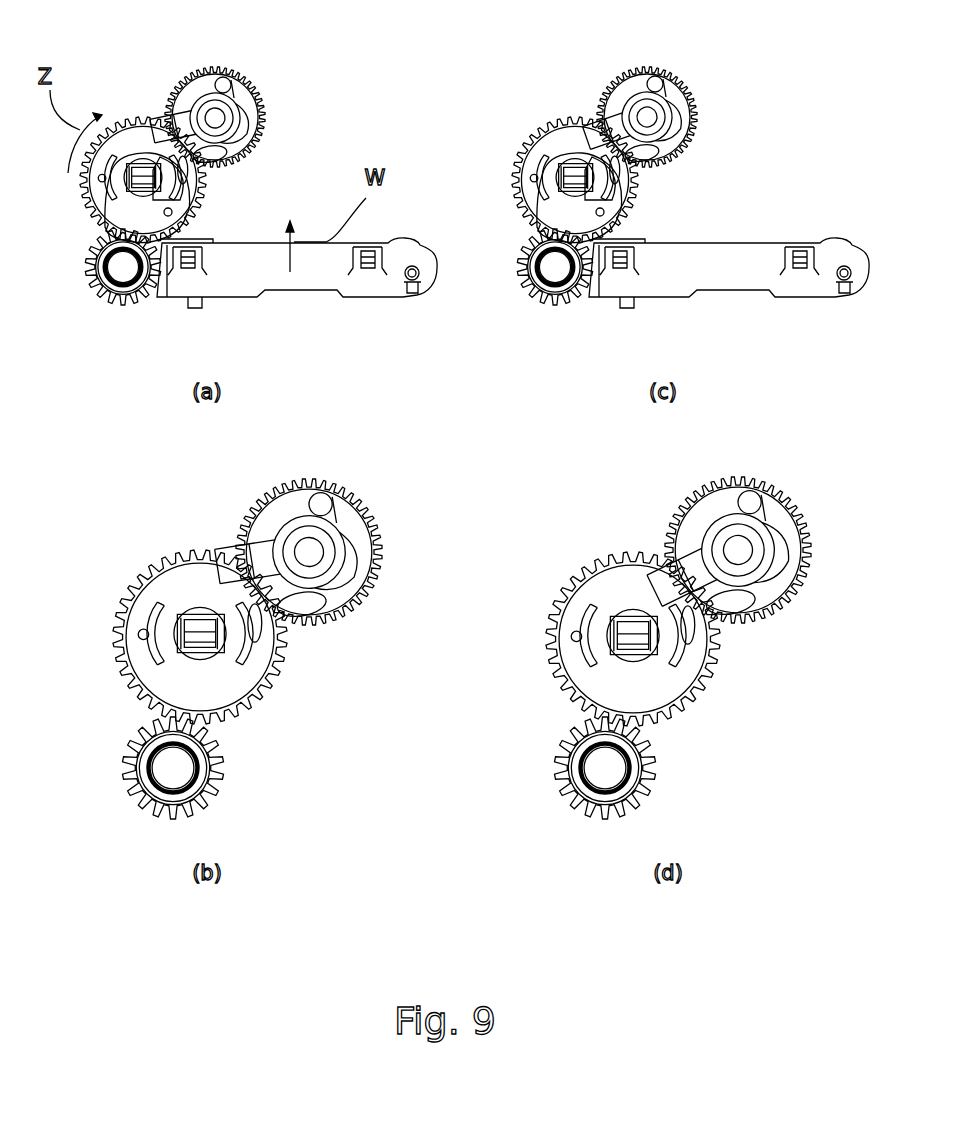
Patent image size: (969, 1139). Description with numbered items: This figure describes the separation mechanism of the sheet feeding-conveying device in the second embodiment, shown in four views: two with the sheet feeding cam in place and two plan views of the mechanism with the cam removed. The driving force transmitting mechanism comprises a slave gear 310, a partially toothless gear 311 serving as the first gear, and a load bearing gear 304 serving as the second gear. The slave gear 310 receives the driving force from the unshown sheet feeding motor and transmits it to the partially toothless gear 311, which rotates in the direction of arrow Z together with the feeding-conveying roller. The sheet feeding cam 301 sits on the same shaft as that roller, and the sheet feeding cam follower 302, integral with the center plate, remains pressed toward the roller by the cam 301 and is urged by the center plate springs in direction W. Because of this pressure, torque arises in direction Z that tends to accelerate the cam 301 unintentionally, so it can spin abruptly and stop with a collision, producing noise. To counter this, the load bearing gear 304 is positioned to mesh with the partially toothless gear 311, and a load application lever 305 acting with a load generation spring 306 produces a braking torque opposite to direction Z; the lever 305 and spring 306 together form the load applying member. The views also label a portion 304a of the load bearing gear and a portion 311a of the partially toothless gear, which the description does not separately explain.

The sheet feeding cam 301 is at (130, 215).
The sheet feeding cam follower 302 is at (240, 277).
The load bearing gear 304 is at (190, 90).
The cam lobe of drive gear 304a is at (227, 160).
The load application lever 305 is at (183, 133).
The load generation spring 306 is at (233, 100).
The slave gear 310 is at (92, 282).
The partially toothless gear 311 is at (130, 150).
The projection of rotary gear 311a is at (200, 177).